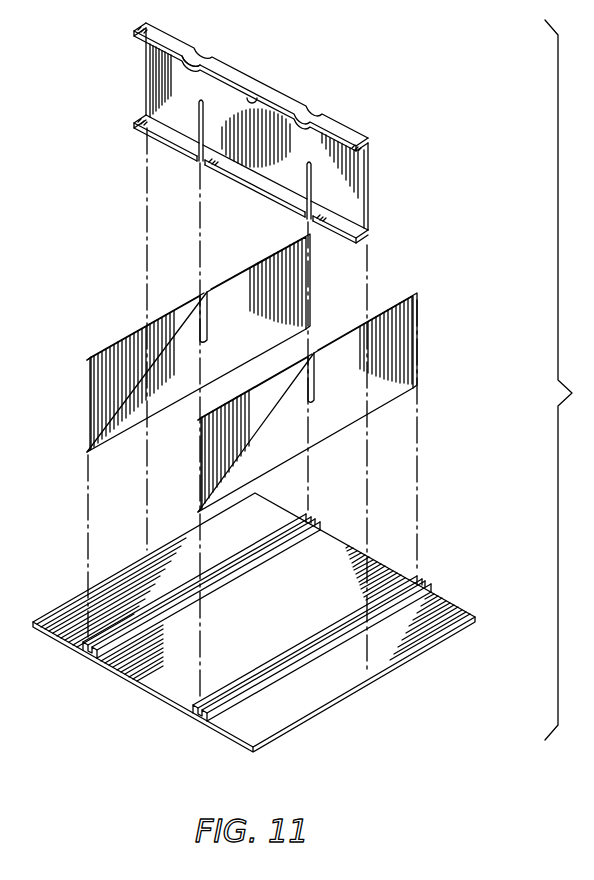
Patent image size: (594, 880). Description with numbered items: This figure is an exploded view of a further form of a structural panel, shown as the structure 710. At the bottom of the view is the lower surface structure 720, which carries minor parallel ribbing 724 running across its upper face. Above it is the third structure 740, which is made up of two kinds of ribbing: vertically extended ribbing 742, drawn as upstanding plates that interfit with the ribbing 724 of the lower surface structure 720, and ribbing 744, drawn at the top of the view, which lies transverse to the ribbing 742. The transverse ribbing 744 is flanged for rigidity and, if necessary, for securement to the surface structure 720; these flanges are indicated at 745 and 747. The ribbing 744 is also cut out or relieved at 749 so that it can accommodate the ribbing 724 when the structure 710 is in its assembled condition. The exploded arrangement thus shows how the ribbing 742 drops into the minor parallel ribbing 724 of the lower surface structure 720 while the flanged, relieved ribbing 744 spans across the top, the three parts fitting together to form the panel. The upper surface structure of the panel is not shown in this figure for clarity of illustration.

The structure 710 is at (302, 386).
The lower surface structure 720 is at (254, 622).
The minor parallel ribbing 724 is at (232, 675).
The third structure 740 is at (322, 205).
The vertically extended ribbing 742 is at (388, 381).
The ribbing 744 is at (331, 118).
The flange 745 is at (263, 103).
The flange 747 is at (242, 186).
The cut out 749 is at (302, 118).